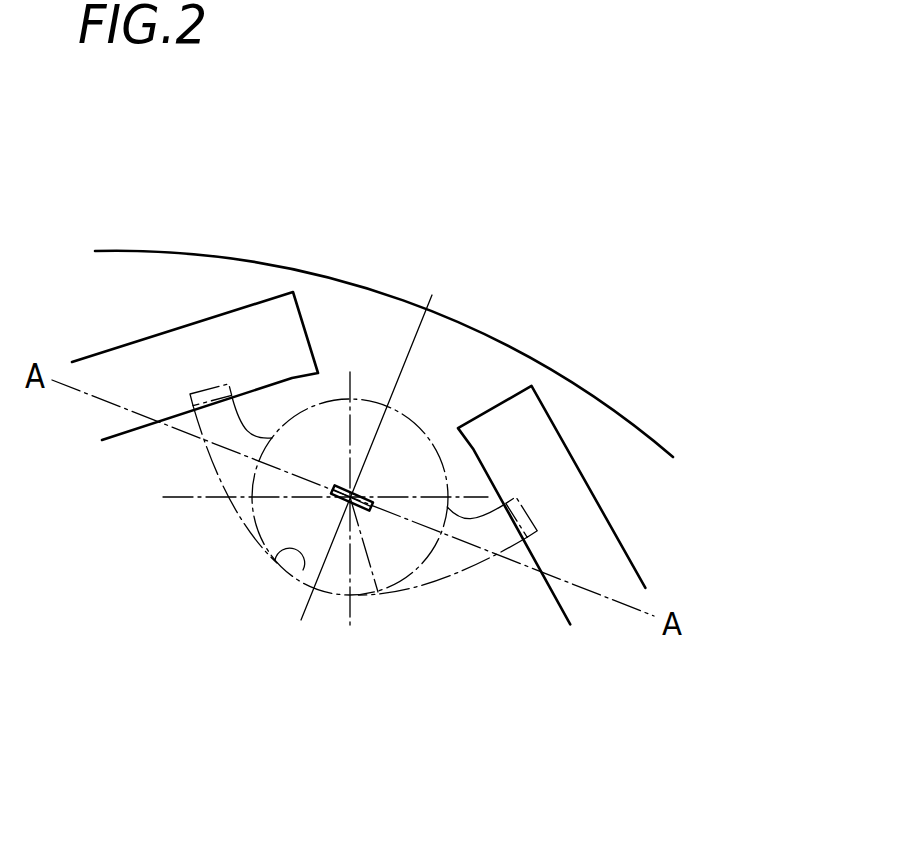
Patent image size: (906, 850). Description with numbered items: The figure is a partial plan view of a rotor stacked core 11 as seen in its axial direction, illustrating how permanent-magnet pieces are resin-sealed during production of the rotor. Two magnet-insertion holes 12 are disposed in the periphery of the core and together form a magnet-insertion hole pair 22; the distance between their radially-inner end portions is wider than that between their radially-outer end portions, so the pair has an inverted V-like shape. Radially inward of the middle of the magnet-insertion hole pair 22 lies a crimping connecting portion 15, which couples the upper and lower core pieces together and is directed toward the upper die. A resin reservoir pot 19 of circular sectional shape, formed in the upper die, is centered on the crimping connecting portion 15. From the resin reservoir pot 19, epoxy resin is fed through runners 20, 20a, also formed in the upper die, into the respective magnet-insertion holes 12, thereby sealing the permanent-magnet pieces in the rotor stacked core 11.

The rotor stacked core 11 is at (562, 365).
The magnet-insertion hole 12 is at (252, 337).
The magnet-insertion hole pair 22 is at (587, 80).
The crimping connecting portion 15 is at (379, 592).
The resin reservoir pot 19 is at (303, 583).
The runner 20 is at (236, 464).
The runner 20a is at (440, 578).